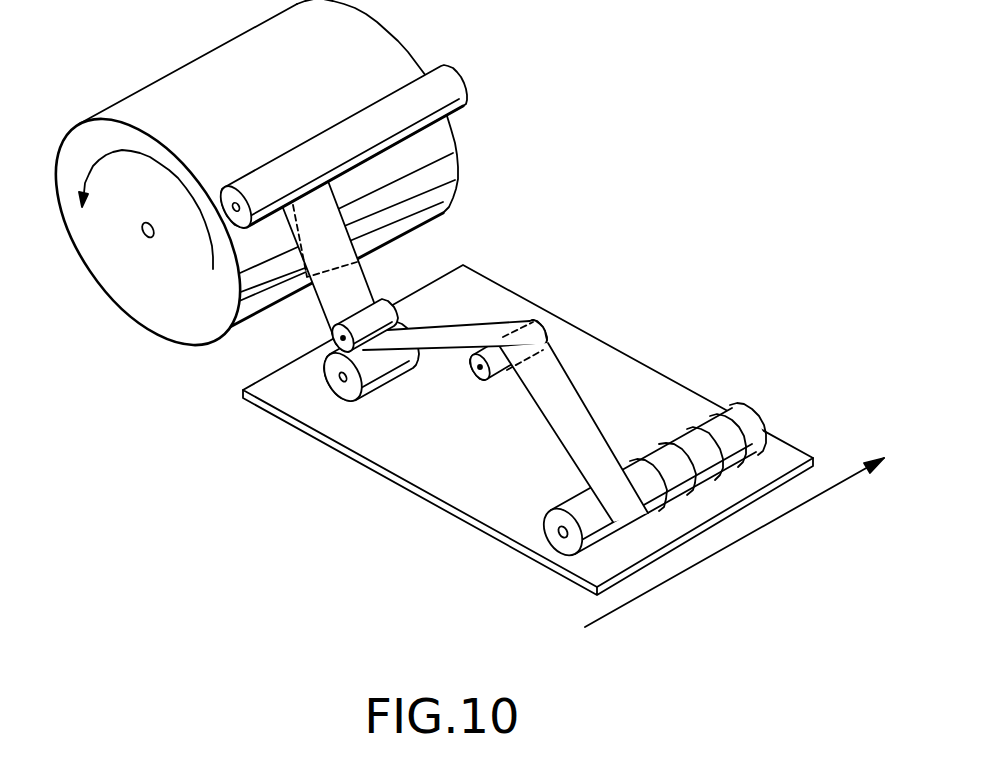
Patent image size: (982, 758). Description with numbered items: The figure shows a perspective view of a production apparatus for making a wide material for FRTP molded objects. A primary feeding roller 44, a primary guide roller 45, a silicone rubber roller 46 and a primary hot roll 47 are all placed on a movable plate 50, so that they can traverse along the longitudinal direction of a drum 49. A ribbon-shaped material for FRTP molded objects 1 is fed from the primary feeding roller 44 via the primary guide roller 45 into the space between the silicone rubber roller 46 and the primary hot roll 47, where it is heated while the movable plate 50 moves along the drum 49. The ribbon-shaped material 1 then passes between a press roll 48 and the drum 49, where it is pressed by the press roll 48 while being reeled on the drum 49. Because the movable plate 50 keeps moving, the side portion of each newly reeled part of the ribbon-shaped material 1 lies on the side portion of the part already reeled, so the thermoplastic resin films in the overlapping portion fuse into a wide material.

The ribbon-shaped material for FRTP molded objects 1 is at (578, 418).
The primary feeding roller 44 is at (557, 529).
The primary guide roller 45 is at (482, 381).
The silicone rubber roller 46 is at (378, 312).
The primary hot roll 47 is at (348, 391).
The press roll 48 is at (449, 88).
The drum 49 is at (122, 277).
The movable plate 50 is at (778, 462).